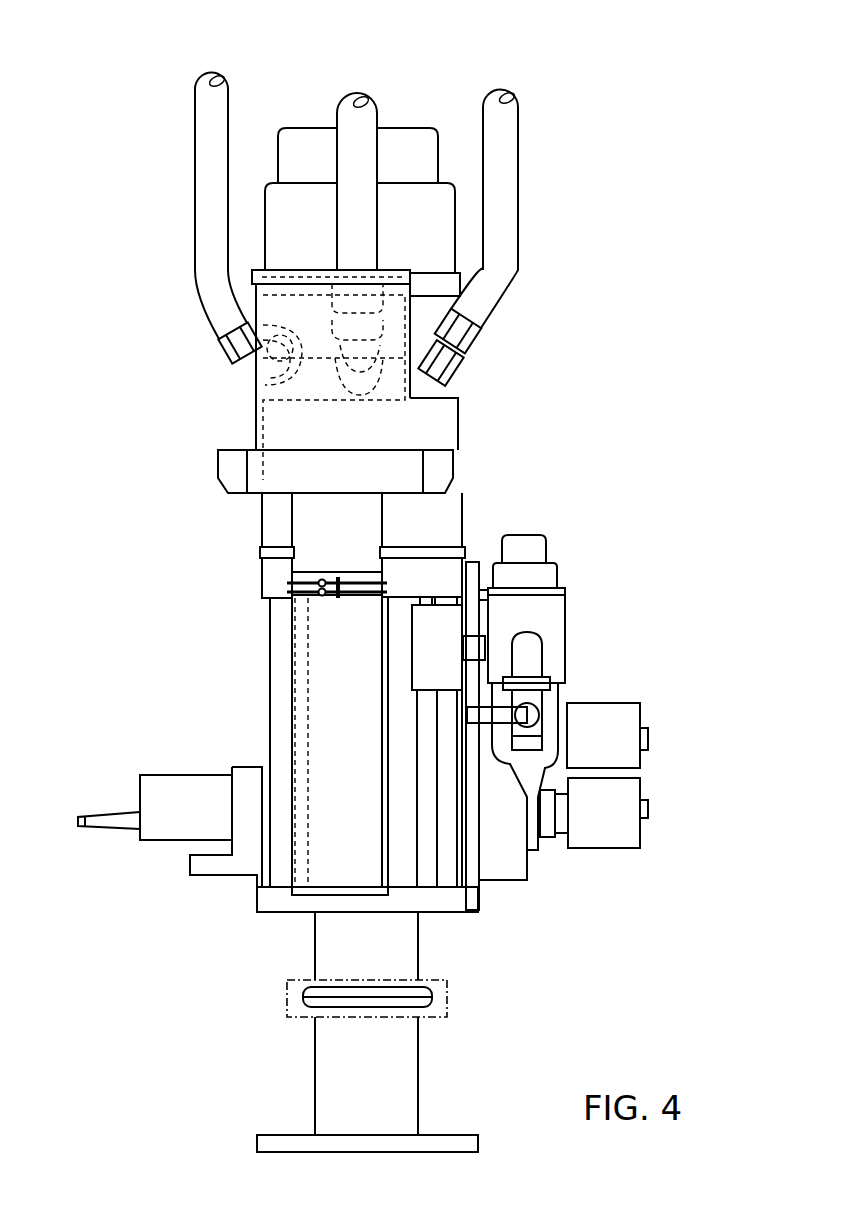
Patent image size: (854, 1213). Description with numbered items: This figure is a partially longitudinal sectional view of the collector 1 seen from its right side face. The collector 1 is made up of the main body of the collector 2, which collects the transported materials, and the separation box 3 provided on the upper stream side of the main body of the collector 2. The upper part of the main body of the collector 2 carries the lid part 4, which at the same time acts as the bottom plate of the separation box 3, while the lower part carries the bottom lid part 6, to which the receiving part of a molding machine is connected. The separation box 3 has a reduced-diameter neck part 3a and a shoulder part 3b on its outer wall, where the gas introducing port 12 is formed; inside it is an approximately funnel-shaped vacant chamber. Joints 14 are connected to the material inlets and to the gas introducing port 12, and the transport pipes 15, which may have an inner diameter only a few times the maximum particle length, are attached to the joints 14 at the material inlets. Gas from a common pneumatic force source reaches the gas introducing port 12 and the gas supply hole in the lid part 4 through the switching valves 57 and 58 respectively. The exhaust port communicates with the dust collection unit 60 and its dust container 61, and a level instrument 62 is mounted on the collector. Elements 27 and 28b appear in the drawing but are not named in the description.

The collector 1 is at (517, 297).
The main body of the collector 2 is at (305, 683).
The separation box 3 is at (467, 512).
The neck part 3a is at (322, 360).
The shoulder part 3b is at (450, 387).
The lid part 4 is at (260, 578).
The bottom lid part 6 is at (448, 903).
The gas introducing port 12 is at (512, 90).
The joints 14 is at (253, 360).
The transport pipes 15 is at (207, 77).
The lower housing 27 is at (265, 207).
The upper housing 28b is at (438, 132).
The switching valve 57 is at (643, 723).
The switching valve 58 is at (643, 825).
The dust collection unit 60 is at (212, 450).
The dust container 61 is at (293, 700).
The level instrument 62 is at (157, 833).